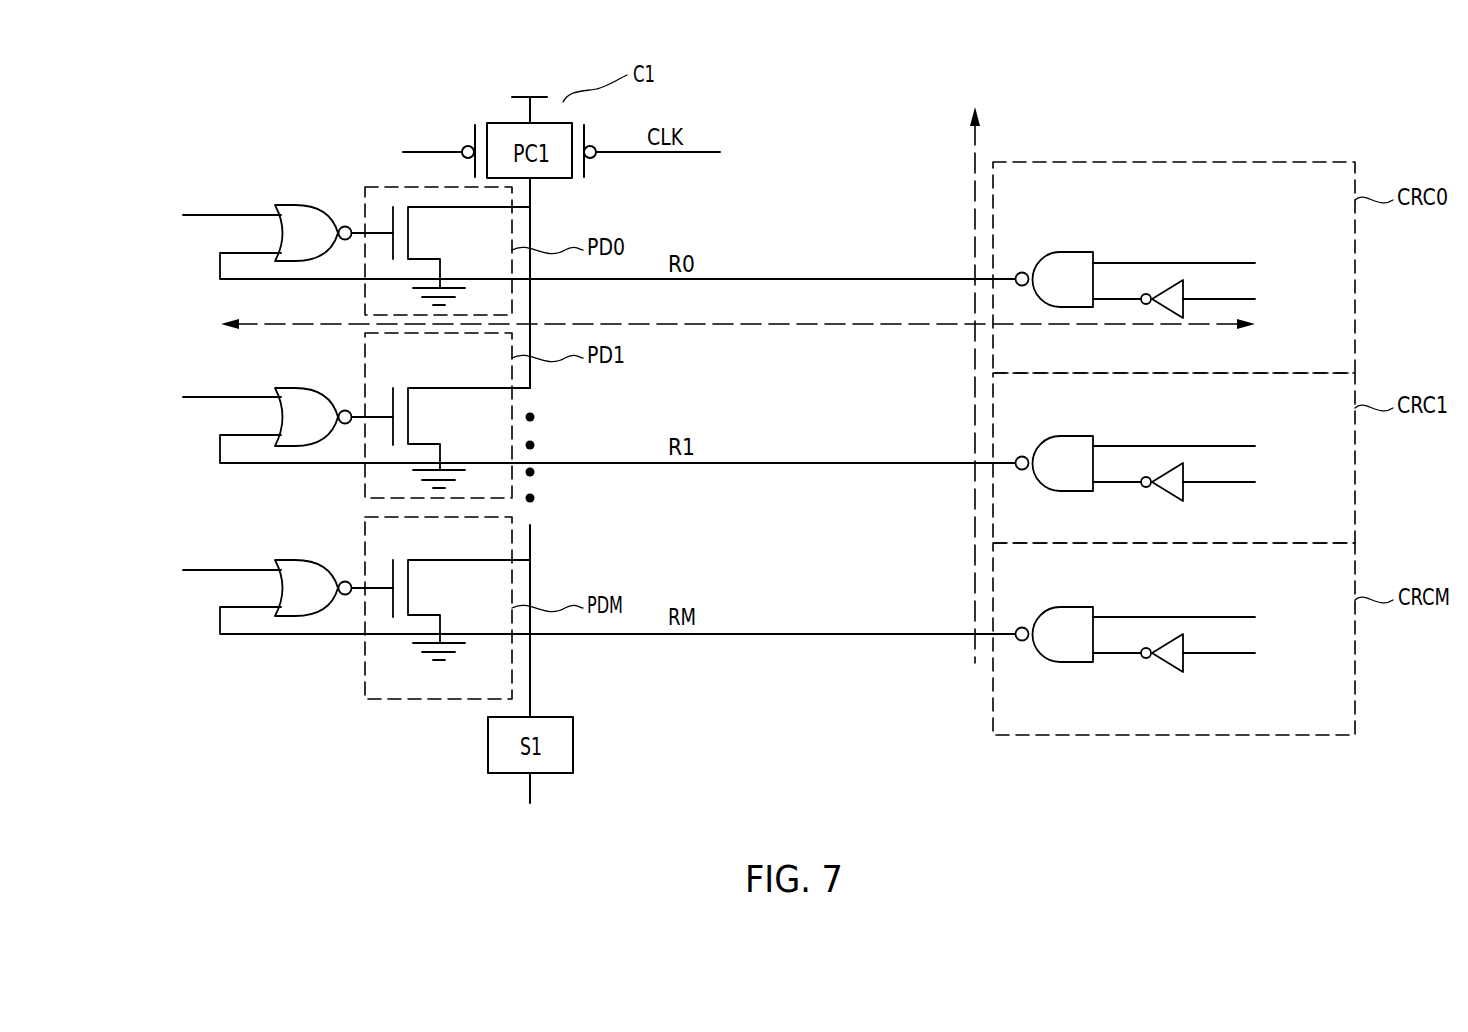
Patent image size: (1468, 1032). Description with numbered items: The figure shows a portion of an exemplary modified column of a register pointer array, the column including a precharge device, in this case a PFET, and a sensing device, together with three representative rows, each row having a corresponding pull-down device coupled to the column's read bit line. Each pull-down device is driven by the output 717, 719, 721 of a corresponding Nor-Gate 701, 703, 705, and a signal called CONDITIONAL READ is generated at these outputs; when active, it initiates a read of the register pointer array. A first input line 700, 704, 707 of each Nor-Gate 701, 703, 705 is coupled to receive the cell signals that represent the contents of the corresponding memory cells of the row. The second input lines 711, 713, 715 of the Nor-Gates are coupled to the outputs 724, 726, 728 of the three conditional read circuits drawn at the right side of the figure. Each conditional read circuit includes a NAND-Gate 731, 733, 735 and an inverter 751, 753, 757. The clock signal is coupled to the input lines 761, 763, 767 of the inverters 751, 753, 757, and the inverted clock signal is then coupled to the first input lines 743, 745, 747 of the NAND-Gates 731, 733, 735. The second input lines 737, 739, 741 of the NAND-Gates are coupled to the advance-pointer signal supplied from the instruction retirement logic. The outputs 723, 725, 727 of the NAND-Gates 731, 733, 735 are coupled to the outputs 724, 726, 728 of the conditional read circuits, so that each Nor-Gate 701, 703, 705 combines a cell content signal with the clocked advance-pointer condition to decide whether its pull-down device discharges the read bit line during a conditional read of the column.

The first input line 700 is at (183, 215).
The second input line 711 is at (220, 265).
The output 717 is at (350, 226).
The Nor-Gate 701 is at (313, 233).
The first input line 704 is at (183, 397).
The second input line 713 is at (220, 449).
The output 719 is at (350, 410).
The Nor-Gate 703 is at (313, 417).
The first input line 707 is at (183, 570).
The second input line 715 is at (220, 619).
The output 721 is at (350, 582).
The Nor-Gate 705 is at (313, 588).
The output of conditional read circuit 724 is at (957, 265).
The output of NAND-Gate 723 is at (1017, 274).
The NAND-Gate 731 is at (1062, 279).
The second input line 737 is at (1120, 263).
The first input line 743 is at (1110, 300).
The inverter 751 is at (1185, 312).
The input line 761 is at (1255, 300).
The output of conditional read circuit 726 is at (957, 448).
The output of NAND-Gate 725 is at (1017, 458).
The NAND-Gate 733 is at (1062, 463).
The second input line 739 is at (1120, 446).
The first input line 745 is at (1110, 483).
The inverter 753 is at (1185, 495).
The input line 763 is at (1255, 483).
The output of conditional read circuit 728 is at (957, 620).
The output of NAND-Gate 727 is at (1017, 629).
The NAND-Gate 735 is at (1062, 634).
The second input line 741 is at (1120, 617).
The first input line 747 is at (1110, 654).
The inverter 757 is at (1185, 666).
The input line 767 is at (1255, 654).